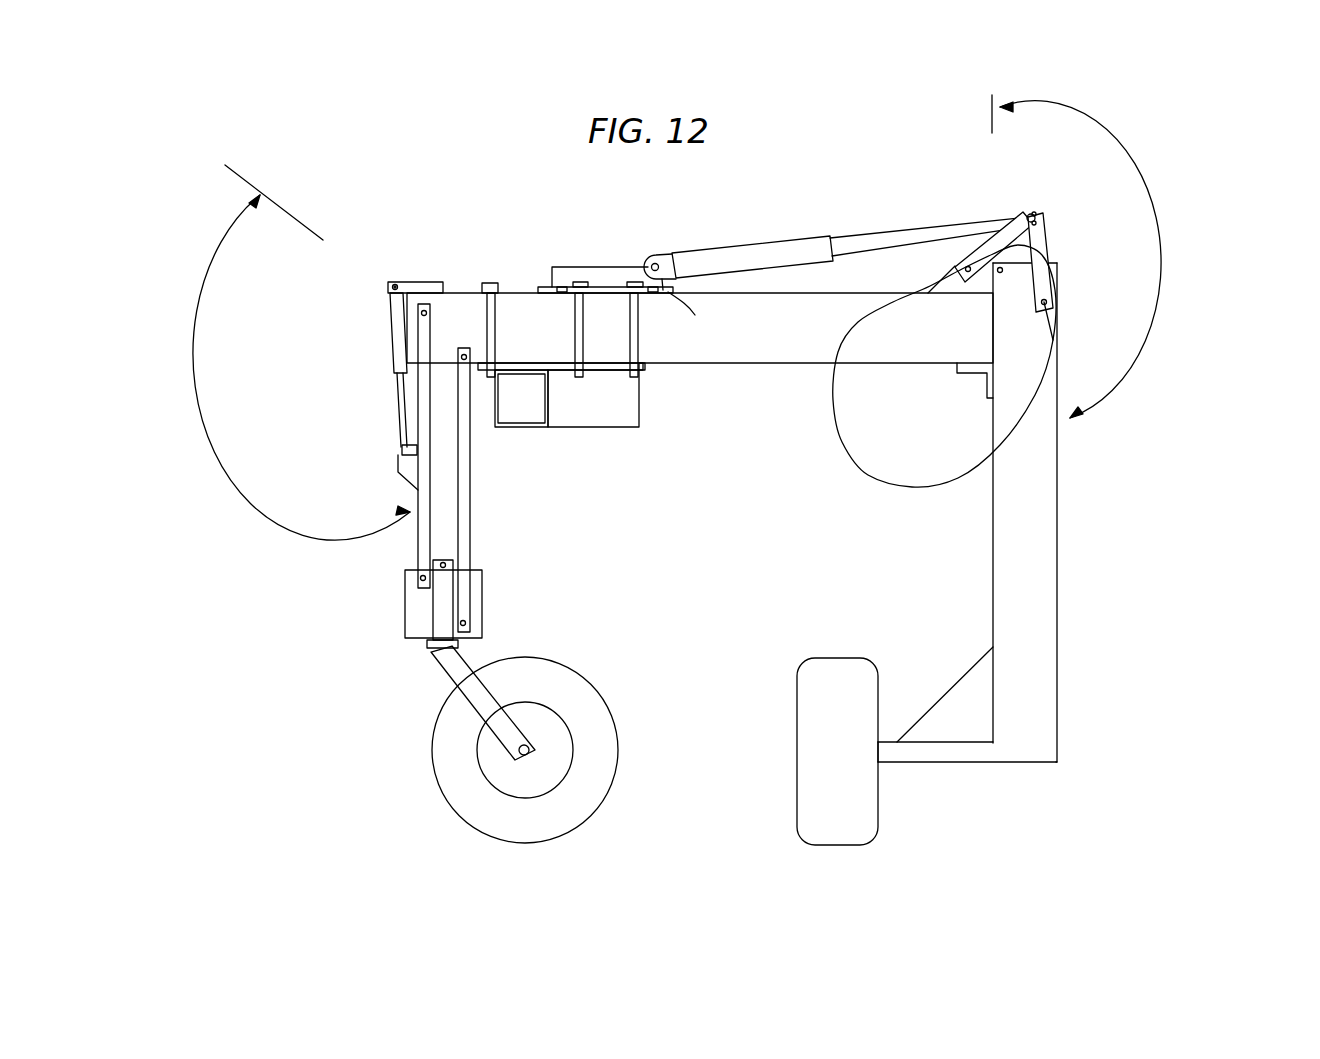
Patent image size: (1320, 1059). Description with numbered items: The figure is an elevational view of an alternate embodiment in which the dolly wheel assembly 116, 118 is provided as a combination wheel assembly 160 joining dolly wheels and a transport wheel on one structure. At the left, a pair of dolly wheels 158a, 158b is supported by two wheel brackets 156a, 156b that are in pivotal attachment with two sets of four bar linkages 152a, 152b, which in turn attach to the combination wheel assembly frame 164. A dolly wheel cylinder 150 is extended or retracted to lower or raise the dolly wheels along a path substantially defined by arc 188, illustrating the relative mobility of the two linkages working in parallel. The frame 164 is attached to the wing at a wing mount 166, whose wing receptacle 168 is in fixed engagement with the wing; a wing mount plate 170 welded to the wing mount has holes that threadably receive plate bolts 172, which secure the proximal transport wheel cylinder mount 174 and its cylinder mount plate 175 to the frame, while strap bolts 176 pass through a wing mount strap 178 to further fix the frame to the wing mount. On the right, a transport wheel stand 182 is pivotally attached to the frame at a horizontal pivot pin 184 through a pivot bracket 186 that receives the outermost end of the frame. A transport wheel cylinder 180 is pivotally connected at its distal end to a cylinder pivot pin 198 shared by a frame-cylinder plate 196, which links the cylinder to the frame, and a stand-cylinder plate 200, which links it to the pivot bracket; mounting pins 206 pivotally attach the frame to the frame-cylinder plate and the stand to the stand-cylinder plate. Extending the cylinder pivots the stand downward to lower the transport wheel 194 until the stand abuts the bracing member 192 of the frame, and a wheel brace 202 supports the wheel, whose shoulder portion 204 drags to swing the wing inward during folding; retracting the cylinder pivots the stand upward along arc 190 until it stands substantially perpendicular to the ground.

The dolly wheel assembly 116 is at (330, 608).
The dolly wheel assembly 118 is at (442, 644).
The dolly wheel cylinder 150 is at (397, 333).
The four bar linkage 152a is at (423, 513).
The four bar linkage 152b is at (463, 556).
The wheel bracket 156a is at (458, 672).
The wheel bracket 156b is at (524, 750).
The dolly wheel 158a is at (563, 665).
The dolly wheel 158b is at (525, 750).
The combination wheel assembly 160 is at (1190, 653).
The combination wheel assembly frame 164 is at (635, 282).
The wing mount 166 is at (598, 407).
The wing receptacle 168 is at (505, 410).
The wing mount plate 170 is at (647, 365).
The plate bolts 172 is at (582, 283).
The proximal transport wheel cylinder mount 174 is at (577, 268).
The cylinder mount plate 175 is at (528, 284).
The strap bolts 176 is at (482, 284).
The wing mount strap 178 is at (477, 292).
The transport wheel cylinder 180 is at (773, 248).
The transport wheel stand 182 is at (1060, 596).
The horizontal pivot pin 184 is at (990, 272).
The pivot bracket 186 is at (1030, 357).
The arc 188 is at (242, 405).
The arc 190 is at (1163, 232).
The bracing member 192 is at (983, 372).
The transport wheel 194 is at (825, 678).
The frame-cylinder plate 196 is at (1007, 247).
The cylinder pivot pin 198 is at (1030, 212).
The stand-cylinder plate 200 is at (1040, 265).
The wheel brace 202 is at (952, 707).
The shoulder portion 204 is at (823, 846).
The mounting pins 206 is at (841, 468).